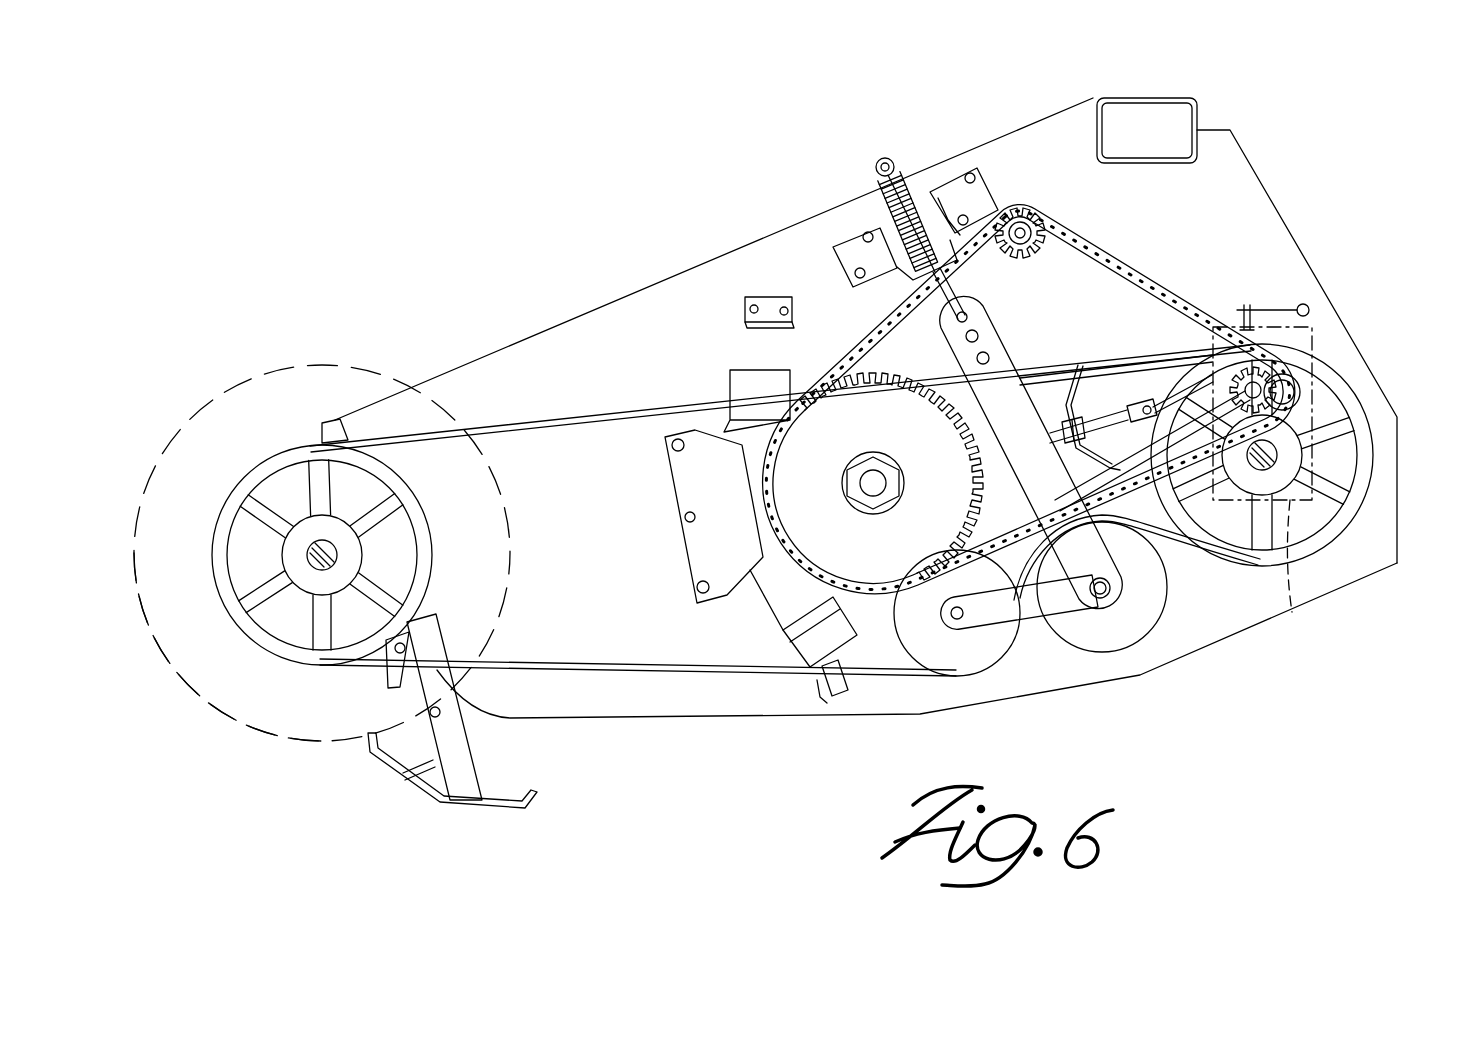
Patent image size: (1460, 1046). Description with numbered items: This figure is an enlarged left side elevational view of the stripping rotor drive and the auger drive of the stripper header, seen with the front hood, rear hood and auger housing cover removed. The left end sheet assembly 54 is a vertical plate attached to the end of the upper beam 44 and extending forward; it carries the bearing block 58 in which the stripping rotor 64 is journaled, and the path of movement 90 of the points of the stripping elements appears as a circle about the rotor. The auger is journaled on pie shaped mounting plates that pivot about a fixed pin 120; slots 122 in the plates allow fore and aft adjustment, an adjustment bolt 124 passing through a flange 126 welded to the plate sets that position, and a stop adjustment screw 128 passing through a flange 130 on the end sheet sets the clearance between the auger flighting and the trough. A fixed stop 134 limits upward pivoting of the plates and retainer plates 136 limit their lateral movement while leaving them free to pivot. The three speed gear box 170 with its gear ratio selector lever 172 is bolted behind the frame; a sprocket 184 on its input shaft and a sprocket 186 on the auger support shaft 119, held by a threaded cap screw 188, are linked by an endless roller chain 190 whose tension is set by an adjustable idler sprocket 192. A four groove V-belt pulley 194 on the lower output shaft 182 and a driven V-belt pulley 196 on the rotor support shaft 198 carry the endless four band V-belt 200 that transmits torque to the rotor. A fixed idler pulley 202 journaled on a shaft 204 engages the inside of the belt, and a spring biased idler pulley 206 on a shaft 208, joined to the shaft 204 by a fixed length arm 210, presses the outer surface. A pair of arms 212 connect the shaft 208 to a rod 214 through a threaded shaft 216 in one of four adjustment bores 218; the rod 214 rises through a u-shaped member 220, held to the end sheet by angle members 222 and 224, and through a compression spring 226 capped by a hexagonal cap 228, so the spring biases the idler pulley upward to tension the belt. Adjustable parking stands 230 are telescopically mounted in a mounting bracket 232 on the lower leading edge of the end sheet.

The upper beam 44 is at (1200, 97).
The end sheet assembly 54 is at (535, 340).
The bearing block 58 is at (318, 437).
The stripping rotor 64 is at (290, 745).
The path of movement 90 is at (385, 372).
The support shaft 119 is at (866, 480).
The fixed pin 120 is at (1133, 400).
The slots 122 is at (1192, 357).
The adjustment bolt 124 is at (1055, 437).
The flange 126 is at (1083, 393).
The stop adjustment screw 128 is at (840, 697).
The flange 130 is at (790, 716).
The fixed stop 134 is at (745, 312).
The retainer plates 136 is at (687, 478).
The three speed gear box 170 is at (1271, 486).
The gear ratio selector lever 172 is at (1306, 312).
The lower output shaft 182 is at (1280, 453).
The sprocket 184 is at (1233, 377).
The sprocket 186 is at (893, 425).
The threaded cap screw 188 is at (866, 499).
The endless roller chain 190 is at (1045, 238).
The adjustable idler sprocket 192 is at (1028, 258).
The four groove V-belt pulley 194 is at (1340, 527).
The driven V-belt pulley 196 is at (268, 642).
The support shaft 198 is at (307, 557).
The endless four band V-belt 200 is at (593, 670).
The fixed idler pulley 202 is at (942, 655).
The shaft 204 is at (960, 619).
The spring biased idler pulley 206 is at (1087, 637).
The shaft 208 is at (1110, 591).
The fixed length arm 210 is at (1030, 612).
The arms 212 is at (1000, 337).
The rod 214 is at (953, 290).
The threaded shaft 216 is at (966, 333).
The adjustment bores 218 is at (977, 358).
The u-shaped member 220 is at (905, 195).
The angle member 222 is at (846, 243).
The angle member 224 is at (952, 185).
The compression spring 226 is at (914, 195).
The hexagonal cap 228 is at (880, 162).
The adjustable parking stands 230 is at (430, 807).
The mounting bracket 232 is at (393, 672).